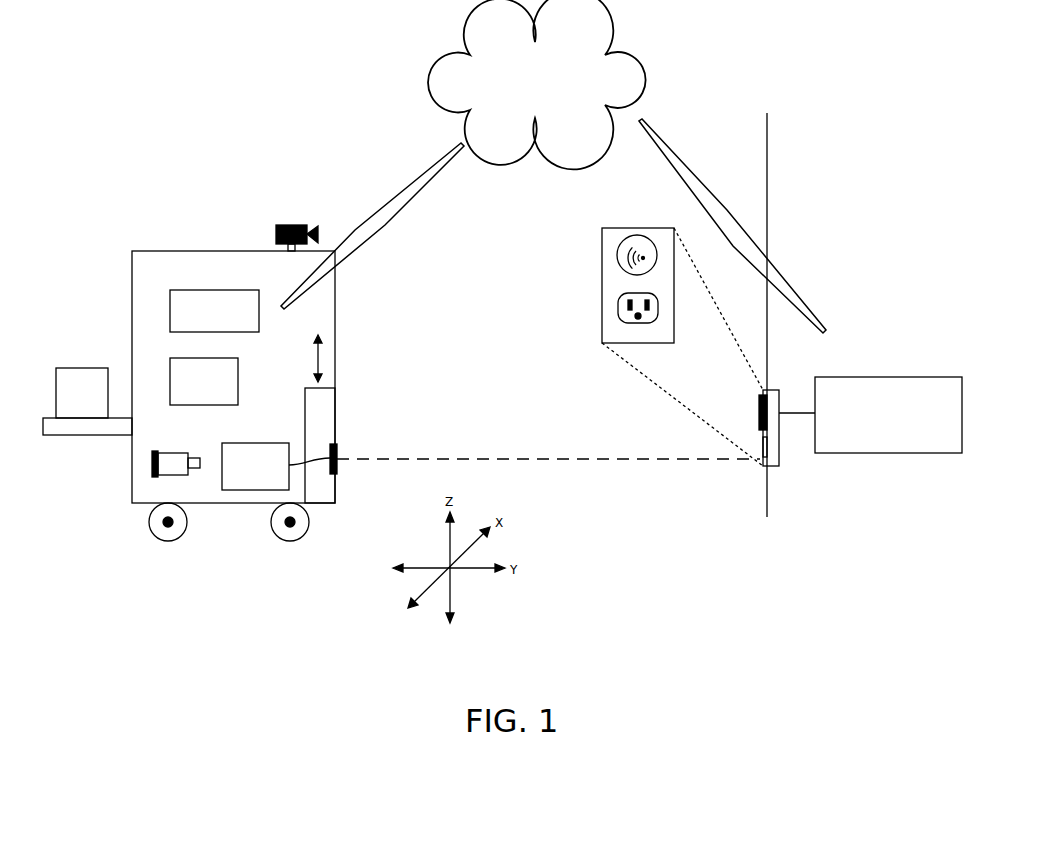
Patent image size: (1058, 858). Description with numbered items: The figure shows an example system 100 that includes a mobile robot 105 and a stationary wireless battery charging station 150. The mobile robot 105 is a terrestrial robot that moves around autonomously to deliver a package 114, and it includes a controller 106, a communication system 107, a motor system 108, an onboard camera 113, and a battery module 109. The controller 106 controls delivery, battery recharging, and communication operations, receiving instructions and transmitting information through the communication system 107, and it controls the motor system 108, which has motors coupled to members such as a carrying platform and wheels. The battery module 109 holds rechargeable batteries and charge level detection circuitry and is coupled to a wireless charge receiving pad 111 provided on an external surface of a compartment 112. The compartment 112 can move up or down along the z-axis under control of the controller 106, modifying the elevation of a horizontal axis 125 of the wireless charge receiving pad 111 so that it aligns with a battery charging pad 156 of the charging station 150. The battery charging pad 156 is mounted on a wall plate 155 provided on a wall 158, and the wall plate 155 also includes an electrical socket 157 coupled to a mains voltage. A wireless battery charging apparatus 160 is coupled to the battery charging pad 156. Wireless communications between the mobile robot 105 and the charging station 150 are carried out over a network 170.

The system 100 is at (744, 598).
The mobile robot 105 is at (118, 228).
The controller 106 is at (212, 290).
The communication system 107 is at (205, 358).
The motor system 108 is at (166, 452).
The battery module 109 is at (264, 443).
The wireless charge receiving pad 111 is at (337, 444).
The compartment 112 is at (305, 418).
The onboard camera 113 is at (296, 225).
The package 114 is at (82, 393).
The horizontal axis 125 is at (508, 459).
The stationary wireless battery charging station 150 is at (866, 310).
The wall plate 155 is at (640, 228).
The battery charging pad 156 is at (623, 269).
The electrical socket 157 is at (621, 318).
The wall 158 is at (768, 218).
The wireless battery charging apparatus 160 is at (862, 377).
The network 170 is at (537, 84).